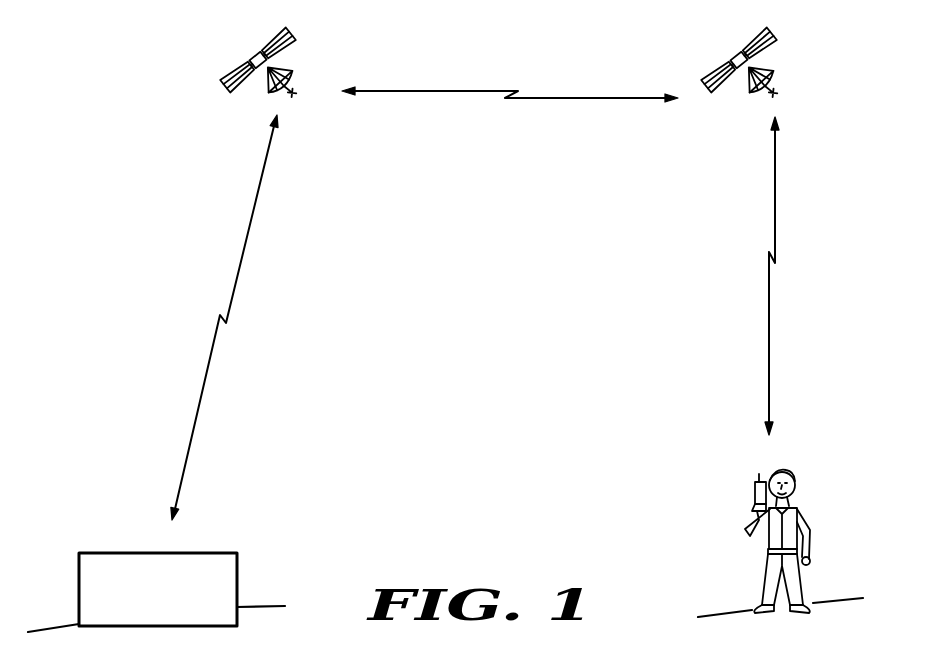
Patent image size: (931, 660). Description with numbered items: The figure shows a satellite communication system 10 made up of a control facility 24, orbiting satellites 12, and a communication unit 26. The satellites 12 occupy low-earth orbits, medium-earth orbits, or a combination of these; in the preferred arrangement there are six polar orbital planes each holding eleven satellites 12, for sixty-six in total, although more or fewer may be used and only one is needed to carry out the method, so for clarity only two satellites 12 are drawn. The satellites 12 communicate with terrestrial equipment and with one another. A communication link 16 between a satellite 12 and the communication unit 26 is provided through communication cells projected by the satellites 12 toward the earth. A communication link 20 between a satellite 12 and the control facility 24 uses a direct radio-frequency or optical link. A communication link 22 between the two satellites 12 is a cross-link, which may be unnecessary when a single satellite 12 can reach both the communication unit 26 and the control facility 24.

The satellite communication system 10 is at (478, 567).
The satellite 12 is at (299, 30).
The communication link 16 is at (768, 293).
The communication link 20 is at (212, 354).
The communication link 22 is at (547, 98).
The control facility 24 is at (100, 553).
The communication unit 26 is at (760, 485).